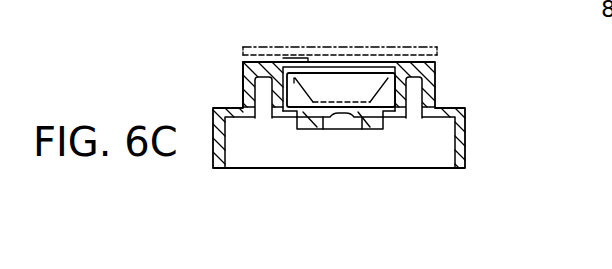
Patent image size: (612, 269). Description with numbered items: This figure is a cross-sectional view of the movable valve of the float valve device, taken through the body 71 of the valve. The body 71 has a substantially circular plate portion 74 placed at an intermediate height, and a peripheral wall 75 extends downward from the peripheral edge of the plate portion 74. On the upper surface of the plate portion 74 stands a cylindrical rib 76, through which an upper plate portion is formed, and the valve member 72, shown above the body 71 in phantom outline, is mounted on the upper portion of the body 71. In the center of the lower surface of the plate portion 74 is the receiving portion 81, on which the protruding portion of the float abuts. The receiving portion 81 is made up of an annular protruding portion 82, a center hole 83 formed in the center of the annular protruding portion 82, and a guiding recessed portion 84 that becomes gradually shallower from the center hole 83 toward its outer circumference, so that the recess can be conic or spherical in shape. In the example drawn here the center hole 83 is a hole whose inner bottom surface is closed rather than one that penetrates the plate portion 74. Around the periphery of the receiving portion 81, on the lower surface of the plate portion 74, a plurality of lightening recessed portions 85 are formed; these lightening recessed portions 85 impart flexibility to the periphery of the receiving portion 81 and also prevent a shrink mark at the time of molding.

The body 71 is at (207, 51).
The valve member 72 is at (344, 48).
The plate portion 74 is at (447, 106).
The peripheral wall 75 is at (463, 137).
The cylindrical rib 76 is at (243, 89).
The receiving portion 81 is at (442, 207).
The annular protruding portion 82 is at (312, 127).
The center hole 83 is at (338, 119).
The guiding recessed portion 84 is at (358, 126).
The lightening recessed portion 85 is at (262, 112).